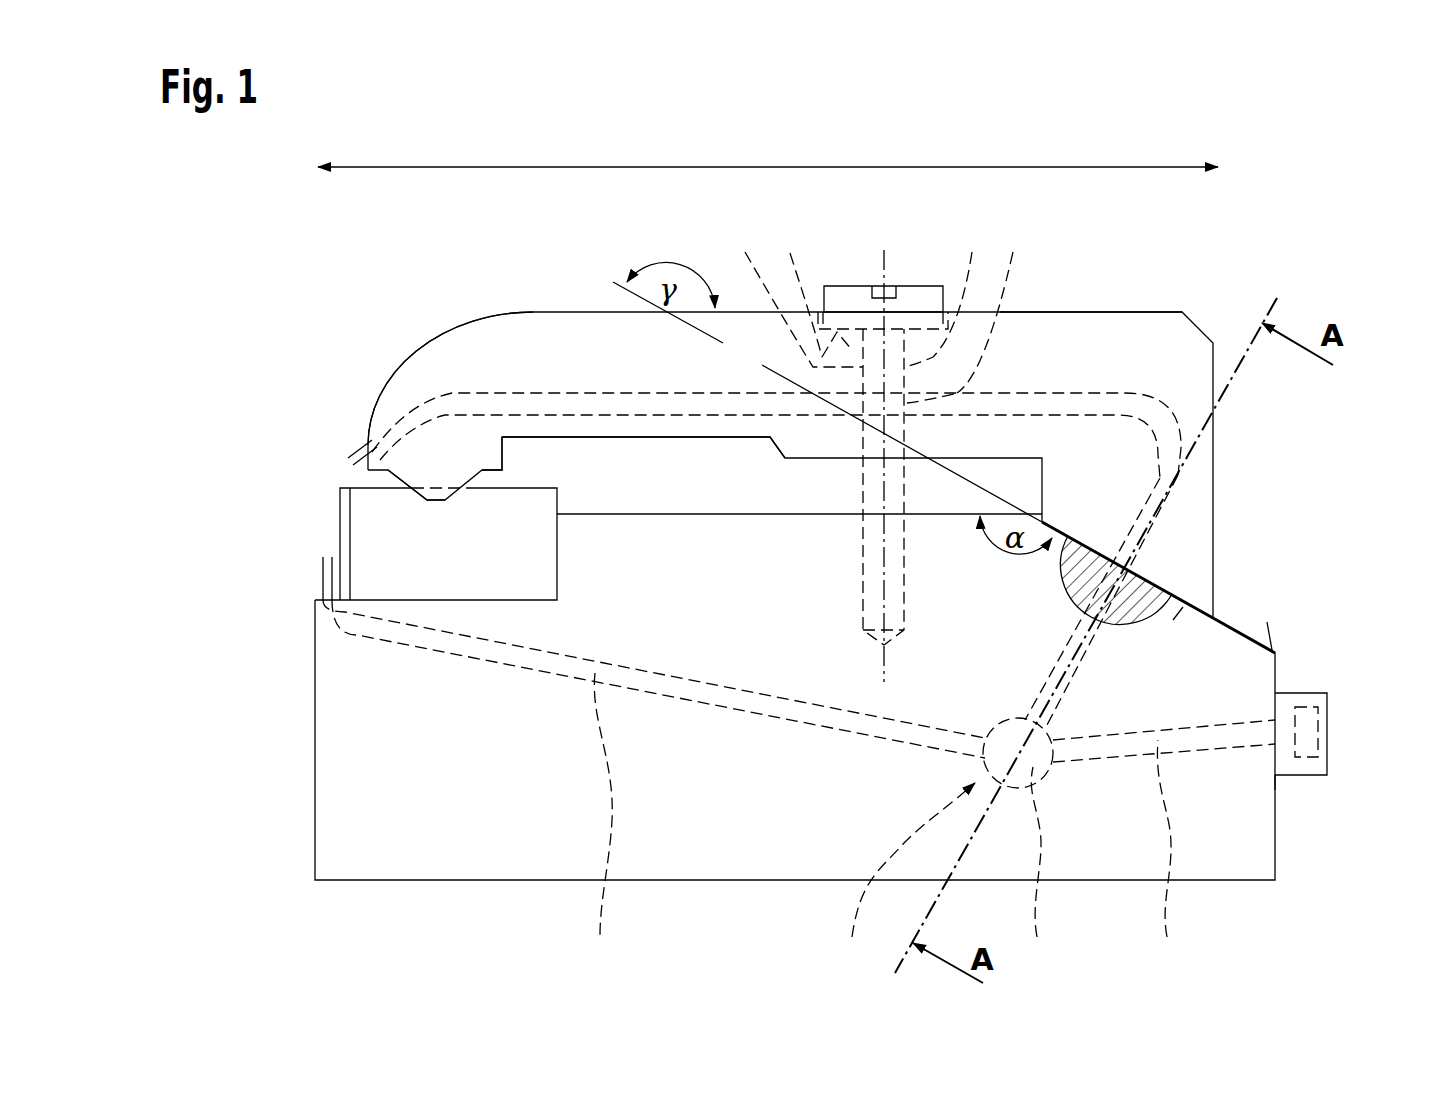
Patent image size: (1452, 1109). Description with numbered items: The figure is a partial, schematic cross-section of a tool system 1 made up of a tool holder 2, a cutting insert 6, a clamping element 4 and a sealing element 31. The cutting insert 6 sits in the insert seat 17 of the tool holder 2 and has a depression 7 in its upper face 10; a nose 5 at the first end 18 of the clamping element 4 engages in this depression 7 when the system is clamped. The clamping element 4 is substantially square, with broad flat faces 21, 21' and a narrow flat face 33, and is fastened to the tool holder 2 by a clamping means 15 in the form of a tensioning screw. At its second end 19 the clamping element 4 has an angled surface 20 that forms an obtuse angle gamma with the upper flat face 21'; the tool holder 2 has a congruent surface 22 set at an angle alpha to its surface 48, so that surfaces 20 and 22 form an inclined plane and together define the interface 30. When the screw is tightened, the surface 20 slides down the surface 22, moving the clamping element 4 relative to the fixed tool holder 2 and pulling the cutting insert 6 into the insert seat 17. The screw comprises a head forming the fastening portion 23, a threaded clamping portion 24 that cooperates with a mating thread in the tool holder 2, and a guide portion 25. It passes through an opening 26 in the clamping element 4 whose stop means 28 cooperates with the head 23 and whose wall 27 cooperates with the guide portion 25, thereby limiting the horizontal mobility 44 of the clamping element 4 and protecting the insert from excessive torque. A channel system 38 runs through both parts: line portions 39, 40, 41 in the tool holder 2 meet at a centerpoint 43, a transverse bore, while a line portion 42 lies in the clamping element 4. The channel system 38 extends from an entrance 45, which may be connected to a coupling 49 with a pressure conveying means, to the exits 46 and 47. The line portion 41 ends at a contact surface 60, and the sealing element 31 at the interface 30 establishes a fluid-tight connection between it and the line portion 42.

The tool system 1 is at (1337, 167).
The tool holder 2 is at (487, 792).
The clamping element 4 is at (1096, 365).
The nose 5 is at (425, 472).
The cutting insert 6 is at (487, 562).
The depression 7 is at (437, 498).
The upper face 10 is at (512, 478).
The clamping means 15 is at (923, 295).
The insert seat 17 is at (398, 600).
The first end 18 is at (355, 363).
The second end 19 is at (1225, 553).
The surface 20 is at (1197, 640).
The broad flat face 21 is at (643, 461).
The broad flat face 21' is at (1091, 265).
The surface 22 is at (1275, 648).
The fastening portion 23 is at (850, 295).
The clamping portion 24 is at (863, 562).
The guide portion 25 is at (945, 293).
The opening 26 is at (967, 311).
The wall 27 is at (794, 293).
The stop means 28 is at (814, 288).
The interface 30 is at (1155, 565).
The sealing element 31 is at (1172, 563).
The narrow flat face 33 is at (723, 365).
The channel system 38 is at (905, 878).
The line portion 39 is at (1164, 846).
The line portion 40 is at (596, 823).
The line portion 41 is at (1070, 680).
The line portion 42 is at (1180, 450).
The centerpoint 43 is at (1018, 845).
The horizontal mobility 44 is at (745, 167).
The entrance 45 is at (1315, 797).
The exit 46 is at (313, 577).
The exit 47 is at (352, 443).
The surface 48 is at (845, 512).
The coupling 49 is at (1327, 698).
The contact surface 60 is at (1123, 630).